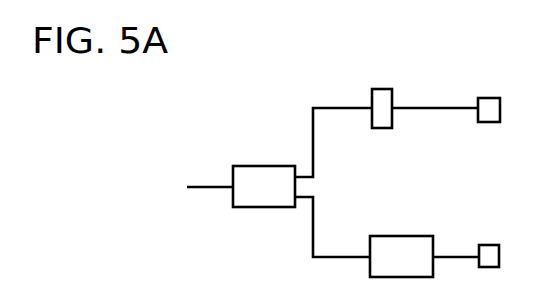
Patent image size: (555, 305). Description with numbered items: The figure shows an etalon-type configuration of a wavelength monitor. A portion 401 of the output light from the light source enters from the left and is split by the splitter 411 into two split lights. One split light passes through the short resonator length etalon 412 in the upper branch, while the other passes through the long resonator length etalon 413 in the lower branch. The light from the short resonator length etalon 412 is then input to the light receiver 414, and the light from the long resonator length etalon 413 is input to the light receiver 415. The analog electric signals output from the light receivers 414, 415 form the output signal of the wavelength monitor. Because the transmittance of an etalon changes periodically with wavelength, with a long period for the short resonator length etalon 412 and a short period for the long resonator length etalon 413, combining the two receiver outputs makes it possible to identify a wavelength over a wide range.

The portion of the output light 401 is at (211, 186).
The splitter 411 is at (262, 165).
The short resonator length etalon 412 is at (380, 89).
The long resonator length etalon 413 is at (400, 236).
The light receiver 414 is at (486, 98).
The light receiver 415 is at (486, 245).